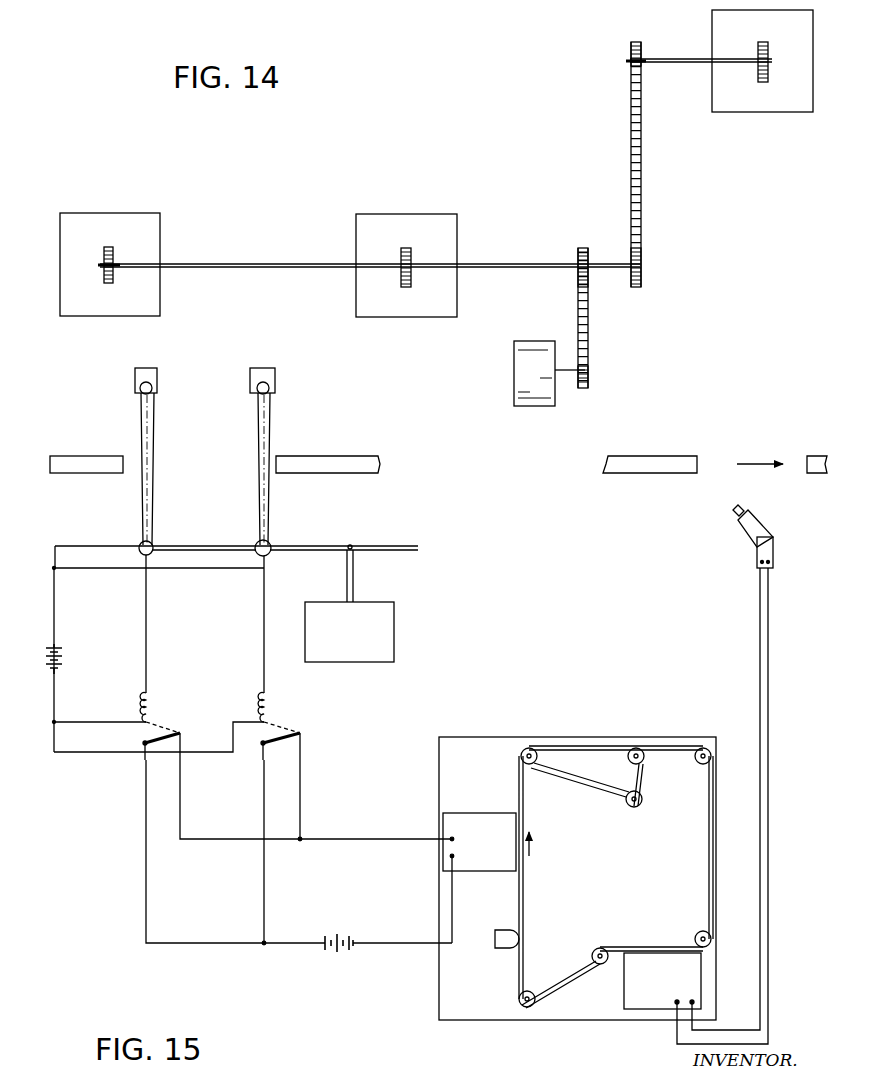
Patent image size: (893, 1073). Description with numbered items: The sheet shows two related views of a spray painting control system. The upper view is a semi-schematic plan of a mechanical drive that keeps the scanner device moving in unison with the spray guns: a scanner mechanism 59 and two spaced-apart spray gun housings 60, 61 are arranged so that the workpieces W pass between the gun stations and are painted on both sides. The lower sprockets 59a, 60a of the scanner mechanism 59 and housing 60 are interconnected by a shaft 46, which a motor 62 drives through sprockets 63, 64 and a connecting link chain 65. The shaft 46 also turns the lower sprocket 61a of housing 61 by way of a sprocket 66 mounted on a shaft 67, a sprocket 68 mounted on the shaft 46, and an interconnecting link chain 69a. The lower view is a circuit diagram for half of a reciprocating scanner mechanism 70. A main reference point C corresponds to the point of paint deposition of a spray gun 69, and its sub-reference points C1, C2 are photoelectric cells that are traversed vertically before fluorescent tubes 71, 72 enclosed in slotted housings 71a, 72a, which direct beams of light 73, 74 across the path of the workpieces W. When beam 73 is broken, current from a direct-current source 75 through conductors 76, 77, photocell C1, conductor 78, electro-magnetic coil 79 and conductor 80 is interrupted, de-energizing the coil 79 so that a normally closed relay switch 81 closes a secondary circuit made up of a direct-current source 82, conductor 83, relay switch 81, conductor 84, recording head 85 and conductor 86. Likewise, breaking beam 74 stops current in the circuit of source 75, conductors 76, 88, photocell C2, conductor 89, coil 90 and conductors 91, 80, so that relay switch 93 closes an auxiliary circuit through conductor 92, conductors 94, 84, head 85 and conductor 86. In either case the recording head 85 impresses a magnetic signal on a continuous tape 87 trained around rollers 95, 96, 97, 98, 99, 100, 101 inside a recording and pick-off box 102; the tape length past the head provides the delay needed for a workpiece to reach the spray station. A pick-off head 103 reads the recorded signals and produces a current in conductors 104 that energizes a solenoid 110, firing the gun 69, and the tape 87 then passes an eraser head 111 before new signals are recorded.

In FIG. 14, the scanner mechanism 59 is at (161, 216).
In FIG. 14, the lower sprocket 59a is at (106, 250).
In FIG. 14, the shaft 46 is at (242, 264).
In FIG. 14, the housing 60 is at (458, 222).
In FIG. 14, the lower sprocket 60a is at (406, 249).
In FIG. 14, the sprocket 63 is at (583, 247).
In FIG. 14, the link chain 65 is at (590, 326).
In FIG. 14, the motor 62 is at (514, 378).
In FIG. 14, the sprocket 64 is at (592, 380).
In FIG. 14, the housing 61 is at (711, 38).
In FIG. 14, the lower sprocket 61a is at (780, 34).
In FIG. 14, the shaft 67 is at (666, 63).
In FIG. 14, the sprocket 66 is at (631, 50).
In FIG. 14, the link chain 69a is at (642, 177).
In FIG. 14, the sprocket 68 is at (642, 251).
In FIG. 15, the slotted housing 71a is at (135, 372).
In FIG. 15, the fluorescent tube 71 is at (140, 391).
In FIG. 15, the beam of light 73 is at (154, 450).
In FIG. 15, the slotted housing 72a is at (275, 371).
In FIG. 15, the fluorescent tube 72 is at (270, 390).
In FIG. 15, the beam of light 74 is at (270, 440).
In FIG. 15, the workpieces W is at (87, 468).
In FIG. 15, the main reference point C is at (200, 548).
In FIG. 15, the sub-reference point C1 is at (140, 544).
In FIG. 15, the sub-reference point C2 is at (272, 545).
In FIG. 15, the conductor 77 is at (84, 547).
In FIG. 15, the conductor 88 is at (184, 569).
In FIG. 15, the scanner mechanism 70 is at (395, 636).
In FIG. 15, the conductor 76 is at (56, 620).
In FIG. 15, the direct-current source 75 is at (63, 660).
In FIG. 15, the conductor 78 is at (144, 651).
In FIG. 15, the electro-magnetic coil 79 is at (151, 708).
In FIG. 15, the conductor 80 is at (56, 712).
In FIG. 15, the conductor 91 is at (75, 752).
In FIG. 15, the relay switch 81 is at (182, 740).
In FIG. 15, the conductor 89 is at (266, 652).
In FIG. 15, the coil 90 is at (270, 708).
In FIG. 15, the relay switch 93 is at (284, 748).
In FIG. 15, the conductor 94 is at (302, 800).
In FIG. 15, the conductor 84 is at (362, 839).
In FIG. 15, the conductor 83 is at (148, 906).
In FIG. 15, the conductor 92 is at (267, 906).
In FIG. 15, the direct-current source 82 is at (340, 952).
In FIG. 15, the conductor 86 is at (412, 948).
In FIG. 15, the recording head 85 is at (497, 871).
In FIG. 15, the recording and pick-off box 102 is at (545, 738).
In FIG. 15, the tape 87 is at (527, 903).
In FIG. 15, the roller 95 is at (534, 766).
In FIG. 15, the roller 100 is at (627, 755).
In FIG. 15, the roller 99 is at (700, 766).
In FIG. 15, the roller 101 is at (640, 806).
In FIG. 15, the roller 98 is at (699, 931).
In FIG. 15, the roller 96 is at (532, 990).
In FIG. 15, the roller 97 is at (600, 965).
In FIG. 15, the eraser head 111 is at (500, 949).
In FIG. 15, the pick-off head 103 is at (700, 998).
In FIG. 15, the conductors 104 is at (762, 972).
In FIG. 15, the spray gun 69 is at (760, 521).
In FIG. 15, the solenoid 110 is at (774, 551).